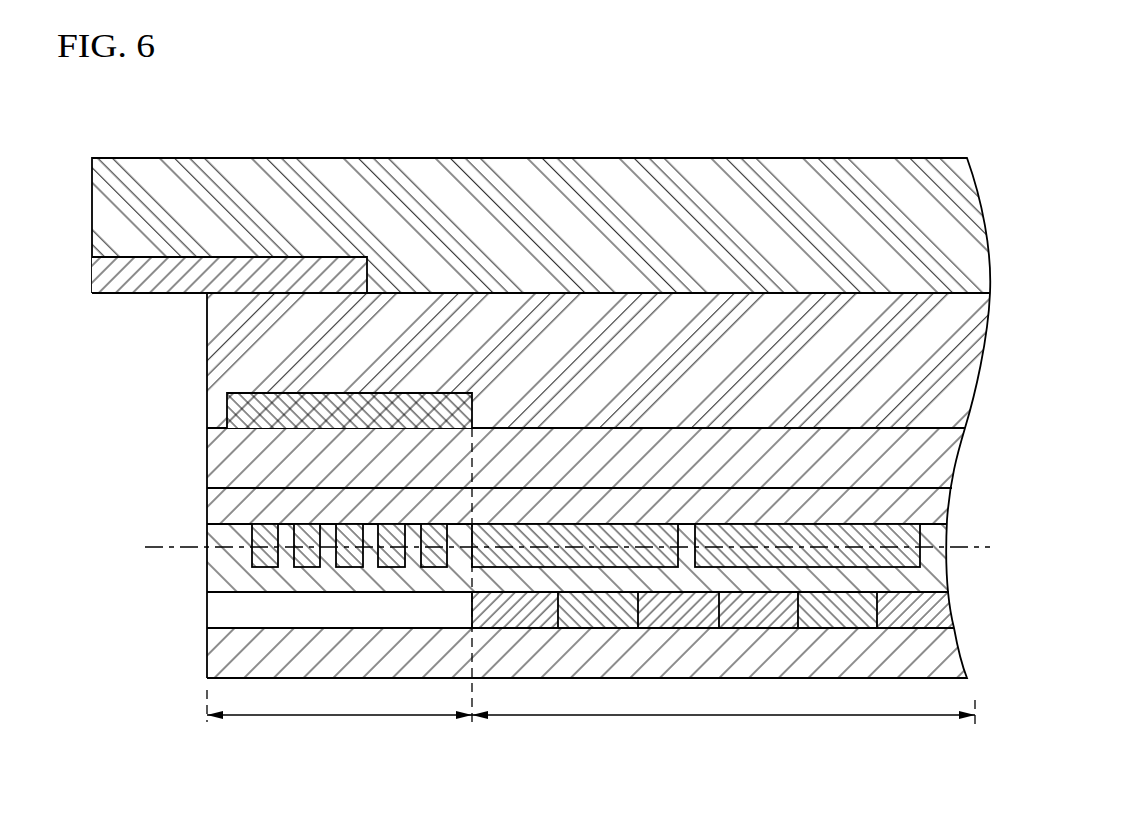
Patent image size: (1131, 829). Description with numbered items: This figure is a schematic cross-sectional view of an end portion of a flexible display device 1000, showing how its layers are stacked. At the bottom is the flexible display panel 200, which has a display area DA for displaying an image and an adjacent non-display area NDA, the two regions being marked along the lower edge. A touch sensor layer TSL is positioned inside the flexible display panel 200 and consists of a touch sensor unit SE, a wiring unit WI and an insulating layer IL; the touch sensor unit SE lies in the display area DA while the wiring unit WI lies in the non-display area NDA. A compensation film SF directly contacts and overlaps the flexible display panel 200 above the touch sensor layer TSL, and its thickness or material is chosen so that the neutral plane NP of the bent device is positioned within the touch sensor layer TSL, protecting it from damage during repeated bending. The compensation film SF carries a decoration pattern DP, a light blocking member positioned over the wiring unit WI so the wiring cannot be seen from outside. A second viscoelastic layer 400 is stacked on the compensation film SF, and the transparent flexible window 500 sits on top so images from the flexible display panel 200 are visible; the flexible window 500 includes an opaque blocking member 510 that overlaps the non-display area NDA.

The flexible display device 1000 is at (639, 78).
The flexible window 500 is at (966, 226).
The blocking member 510 is at (108, 281).
The second viscoelastic layer 400 is at (965, 350).
The decoration pattern DP is at (238, 413).
The compensation film SF is at (932, 472).
The flexible display panel 200 is at (584, 583).
The touch sensor layer TSL is at (658, 586).
The touch sensor unit SE is at (913, 535).
The insulating layer IL is at (930, 578).
The wiring unit WI is at (435, 563).
The neutral plane NP is at (551, 546).
The non-display area NDA is at (339, 730).
The display area DA is at (723, 730).